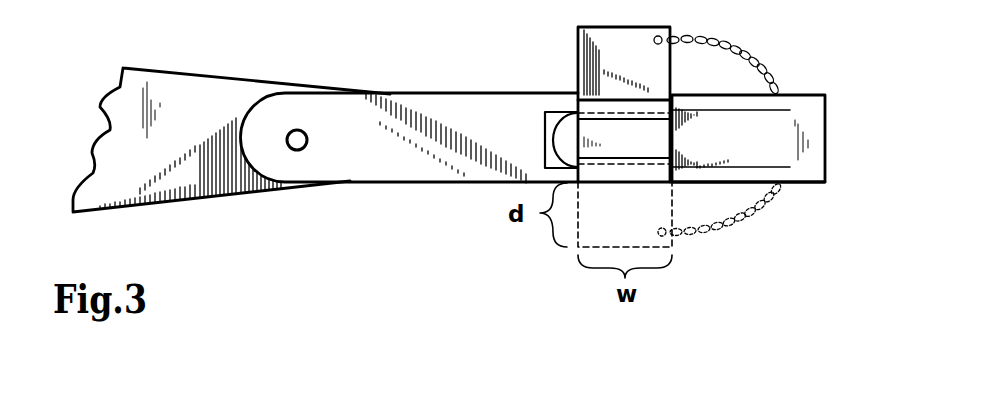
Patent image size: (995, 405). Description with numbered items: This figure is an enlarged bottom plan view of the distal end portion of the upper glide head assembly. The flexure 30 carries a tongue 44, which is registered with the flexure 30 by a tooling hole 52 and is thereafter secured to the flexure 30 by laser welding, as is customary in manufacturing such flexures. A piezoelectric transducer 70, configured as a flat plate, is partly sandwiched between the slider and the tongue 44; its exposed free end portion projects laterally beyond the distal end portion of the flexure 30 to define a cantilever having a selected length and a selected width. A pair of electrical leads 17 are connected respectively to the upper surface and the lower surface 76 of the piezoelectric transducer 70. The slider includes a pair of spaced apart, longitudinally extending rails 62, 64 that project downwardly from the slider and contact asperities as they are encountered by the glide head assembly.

The flexure 30 is at (187, 88).
The tongue 44 is at (373, 181).
The tooling hole 52 is at (297, 130).
The rail 62 is at (692, 114).
The rail 64 is at (638, 170).
The piezoelectric transducer 70 is at (603, 134).
The lower surface of piezoelectric transducer 76 is at (637, 64).
The electrical leads 17 is at (720, 118).